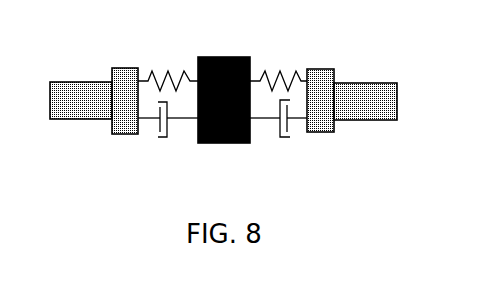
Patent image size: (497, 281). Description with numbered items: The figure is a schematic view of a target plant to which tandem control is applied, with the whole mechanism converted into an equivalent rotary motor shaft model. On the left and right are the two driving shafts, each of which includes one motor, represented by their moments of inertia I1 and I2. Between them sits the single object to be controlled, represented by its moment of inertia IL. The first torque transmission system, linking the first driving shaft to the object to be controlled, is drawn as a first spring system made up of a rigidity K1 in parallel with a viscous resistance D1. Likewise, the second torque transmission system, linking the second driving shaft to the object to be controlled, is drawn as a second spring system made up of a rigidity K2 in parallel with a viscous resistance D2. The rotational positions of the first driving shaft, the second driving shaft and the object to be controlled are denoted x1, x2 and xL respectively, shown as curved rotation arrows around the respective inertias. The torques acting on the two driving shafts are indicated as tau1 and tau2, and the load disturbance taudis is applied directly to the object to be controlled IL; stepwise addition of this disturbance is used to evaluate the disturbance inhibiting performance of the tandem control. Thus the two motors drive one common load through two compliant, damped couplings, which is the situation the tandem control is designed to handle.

The moment of inertia of the driving shaft 1 I1 is at (64, 119).
The torque of the driving shaft 1 tau1 is at (68, 94).
The position of the driving shaft 1 x1 is at (99, 124).
The rigidity K1 is at (168, 71).
The viscous resistance D1 is at (168, 132).
The moment of inertia of the object to be controlled IL is at (205, 144).
The load disturbance taudis is at (224, 74).
The position of the object to be controlled xL is at (229, 57).
The rigidity K2 is at (278, 72).
The viscous resistance D2 is at (278, 132).
The moment of inertia of the driving shaft 2 I2 is at (387, 120).
The position of the driving shaft 2 x2 is at (350, 125).
The torque of the driving shaft 2 tau2 is at (384, 96).